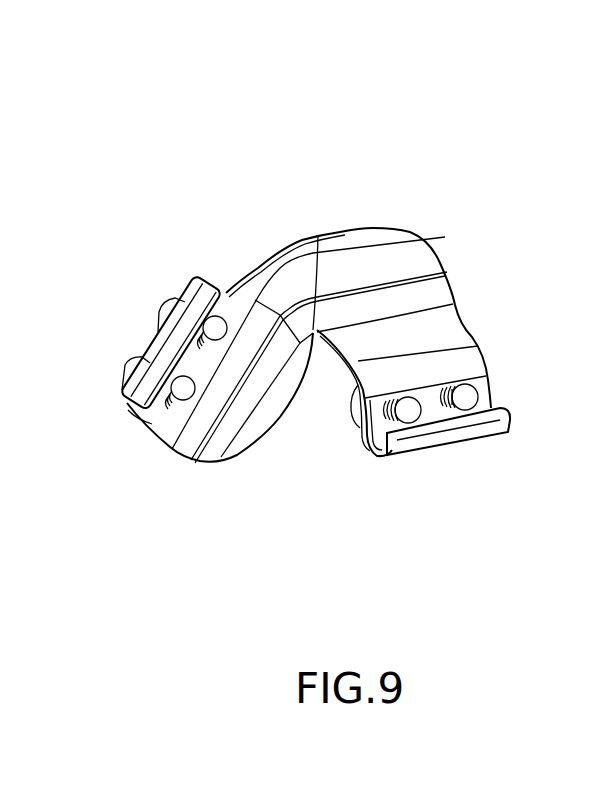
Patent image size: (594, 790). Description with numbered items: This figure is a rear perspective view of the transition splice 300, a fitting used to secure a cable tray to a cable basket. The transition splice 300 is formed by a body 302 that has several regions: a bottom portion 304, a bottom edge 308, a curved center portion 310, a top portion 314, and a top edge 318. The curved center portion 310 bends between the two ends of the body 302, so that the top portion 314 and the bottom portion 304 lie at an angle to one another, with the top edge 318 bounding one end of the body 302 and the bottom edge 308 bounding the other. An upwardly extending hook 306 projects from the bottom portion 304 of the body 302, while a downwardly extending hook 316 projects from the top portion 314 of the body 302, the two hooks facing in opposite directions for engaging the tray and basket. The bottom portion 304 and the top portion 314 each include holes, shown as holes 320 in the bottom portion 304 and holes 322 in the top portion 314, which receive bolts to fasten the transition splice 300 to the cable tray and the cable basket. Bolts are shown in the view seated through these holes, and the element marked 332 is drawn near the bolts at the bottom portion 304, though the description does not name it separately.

The transition splice 300 is at (407, 104).
The body 302 is at (457, 308).
The bottom portion 304 is at (420, 452).
The upwardly extending hook 306 is at (445, 425).
The bottom edge 308 is at (290, 403).
The curved center portion 310 is at (428, 287).
The top portion 314 is at (147, 345).
The downwardly extending hook 316 is at (208, 297).
The top edge 318 is at (318, 234).
The holes 320 is at (458, 387).
The holes 322 is at (152, 420).
The washer 332 is at (457, 398).